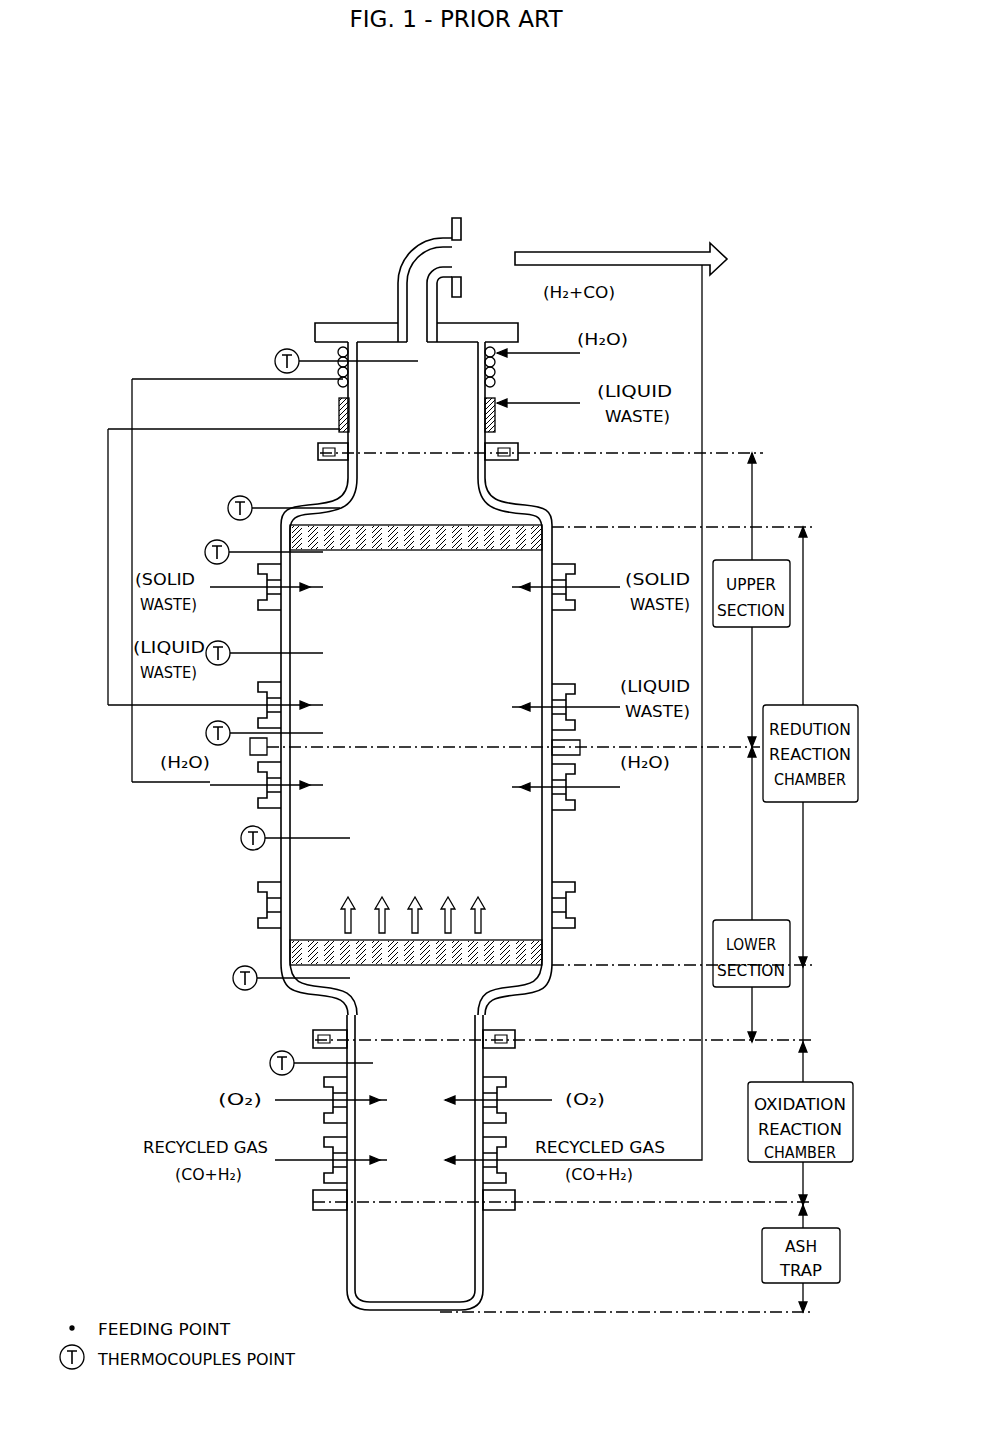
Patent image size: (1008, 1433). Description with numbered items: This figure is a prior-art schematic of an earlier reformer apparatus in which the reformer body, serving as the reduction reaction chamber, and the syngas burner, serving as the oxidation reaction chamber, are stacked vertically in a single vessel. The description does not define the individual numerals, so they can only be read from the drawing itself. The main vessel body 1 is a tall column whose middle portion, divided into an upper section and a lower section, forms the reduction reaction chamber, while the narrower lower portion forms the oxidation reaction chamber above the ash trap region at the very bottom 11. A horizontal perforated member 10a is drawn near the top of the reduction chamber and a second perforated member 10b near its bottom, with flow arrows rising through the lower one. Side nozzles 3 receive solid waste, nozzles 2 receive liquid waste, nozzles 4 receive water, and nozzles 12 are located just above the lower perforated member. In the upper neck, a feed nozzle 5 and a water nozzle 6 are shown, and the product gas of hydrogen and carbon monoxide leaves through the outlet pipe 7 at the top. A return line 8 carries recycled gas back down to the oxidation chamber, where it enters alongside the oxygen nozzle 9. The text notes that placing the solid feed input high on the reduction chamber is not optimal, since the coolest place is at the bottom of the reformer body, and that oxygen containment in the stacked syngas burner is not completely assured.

The reduction reaction chamber (reactor body) 1 is at (542, 505).
The liquid waste feeding port 2 is at (290, 703).
The solid waste feeding port 3 is at (290, 577).
The water feeding port 4 is at (290, 781).
The upper liquid waste feeding port 5 is at (339, 408).
The upper water feeding port 6 is at (496, 384).
The product gas outlet pipe 7 is at (428, 242).
The recycled gas line 8 is at (703, 380).
The oxygen feeding port 9 is at (500, 1088).
The upper grate 10a is at (431, 524).
The lower grate 10b is at (455, 968).
The ash trap 11 is at (483, 1280).
The recycled gas feeding port 12 is at (290, 890).